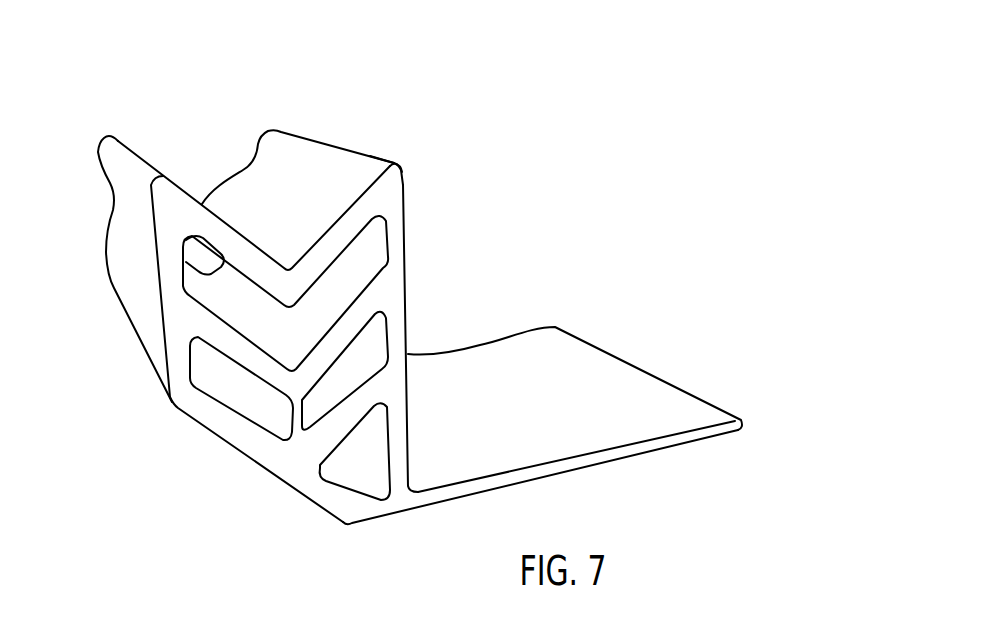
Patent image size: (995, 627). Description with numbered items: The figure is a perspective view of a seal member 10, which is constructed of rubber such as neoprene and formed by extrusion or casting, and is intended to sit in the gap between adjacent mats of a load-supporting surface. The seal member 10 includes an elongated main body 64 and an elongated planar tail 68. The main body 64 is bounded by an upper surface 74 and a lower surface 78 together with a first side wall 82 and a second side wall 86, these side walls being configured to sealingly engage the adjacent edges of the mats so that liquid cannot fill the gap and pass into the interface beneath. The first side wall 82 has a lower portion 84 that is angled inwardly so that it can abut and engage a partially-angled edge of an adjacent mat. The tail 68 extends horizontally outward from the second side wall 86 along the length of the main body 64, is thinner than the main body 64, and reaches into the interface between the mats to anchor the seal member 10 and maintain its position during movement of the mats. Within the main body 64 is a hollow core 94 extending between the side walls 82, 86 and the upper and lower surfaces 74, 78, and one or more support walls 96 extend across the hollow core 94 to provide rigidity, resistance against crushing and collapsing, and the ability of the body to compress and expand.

The seal member 10 is at (492, 129).
The main body 64 is at (355, 148).
The tail 68 is at (594, 343).
The upper surface 74 is at (309, 163).
The lower surface 78 is at (379, 518).
The first side wall 82 is at (110, 220).
The lower portion 84 is at (207, 430).
The second side wall 86 is at (406, 225).
The hollow core 94 is at (192, 251).
The support walls 96 is at (341, 328).